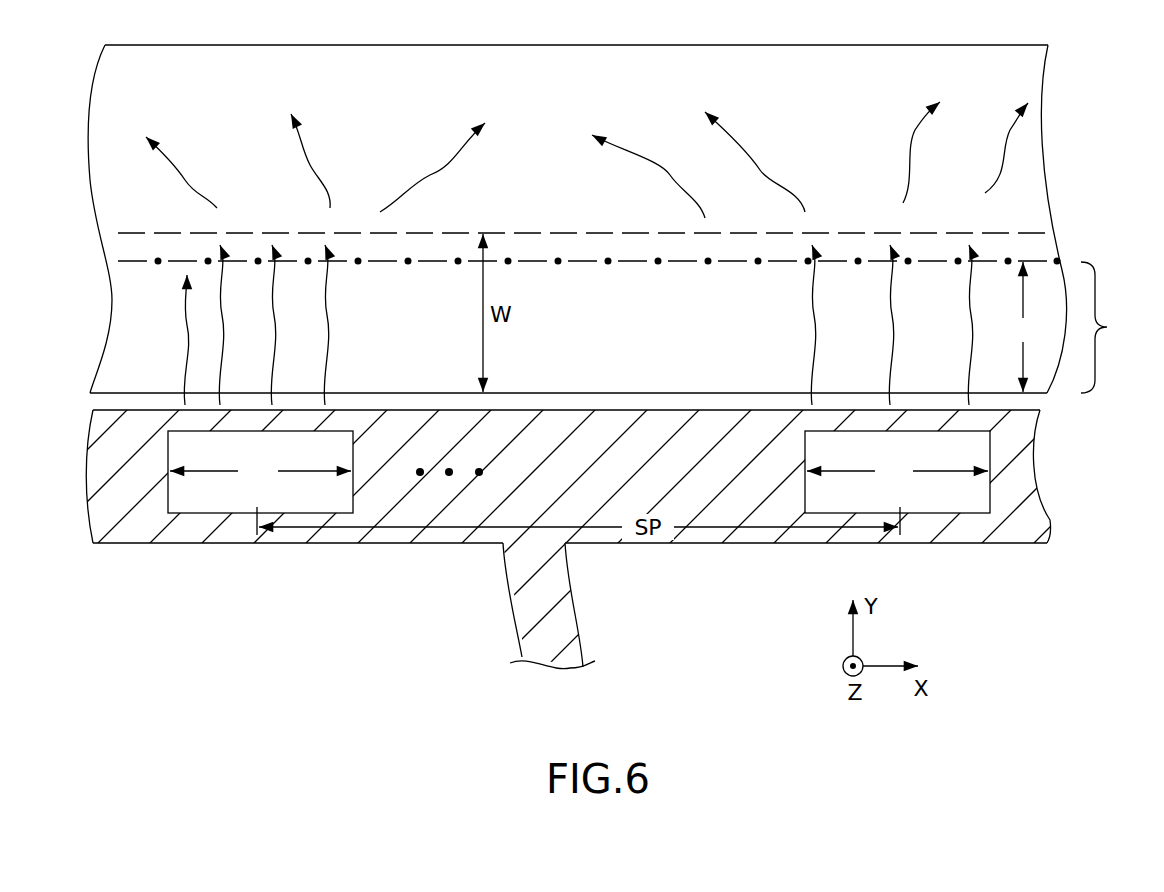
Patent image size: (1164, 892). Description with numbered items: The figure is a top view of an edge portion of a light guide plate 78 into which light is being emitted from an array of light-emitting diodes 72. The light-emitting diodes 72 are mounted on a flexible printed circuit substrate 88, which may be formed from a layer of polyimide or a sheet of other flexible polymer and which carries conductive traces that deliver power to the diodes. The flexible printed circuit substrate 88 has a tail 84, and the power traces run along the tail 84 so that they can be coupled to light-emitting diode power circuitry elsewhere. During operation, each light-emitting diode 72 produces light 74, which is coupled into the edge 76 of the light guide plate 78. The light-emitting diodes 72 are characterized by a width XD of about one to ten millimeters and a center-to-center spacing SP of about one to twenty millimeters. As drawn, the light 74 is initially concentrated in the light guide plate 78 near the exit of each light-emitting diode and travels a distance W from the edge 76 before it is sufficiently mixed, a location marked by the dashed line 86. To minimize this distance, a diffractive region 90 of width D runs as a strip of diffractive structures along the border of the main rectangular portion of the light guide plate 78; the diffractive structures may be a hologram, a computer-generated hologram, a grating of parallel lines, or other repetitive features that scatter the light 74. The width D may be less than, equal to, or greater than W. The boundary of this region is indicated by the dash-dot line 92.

The light-emitting diodes 72 is at (212, 503).
The light 74 is at (307, 148).
The edge of light guide plate 76 is at (590, 393).
The light guide plate 78 is at (124, 320).
The tail 84 is at (560, 605).
The dashed line 86 is at (1023, 233).
The flexible printed circuit substrate 88 is at (423, 534).
The diffractive region 90 is at (1079, 327).
The boundary line of mixing region 92 is at (1038, 261).